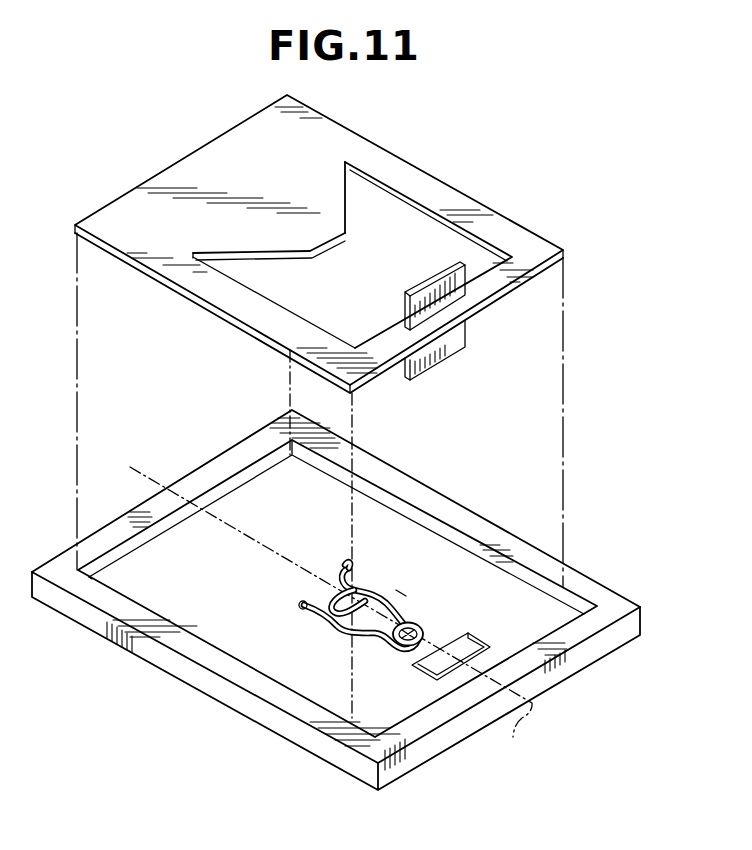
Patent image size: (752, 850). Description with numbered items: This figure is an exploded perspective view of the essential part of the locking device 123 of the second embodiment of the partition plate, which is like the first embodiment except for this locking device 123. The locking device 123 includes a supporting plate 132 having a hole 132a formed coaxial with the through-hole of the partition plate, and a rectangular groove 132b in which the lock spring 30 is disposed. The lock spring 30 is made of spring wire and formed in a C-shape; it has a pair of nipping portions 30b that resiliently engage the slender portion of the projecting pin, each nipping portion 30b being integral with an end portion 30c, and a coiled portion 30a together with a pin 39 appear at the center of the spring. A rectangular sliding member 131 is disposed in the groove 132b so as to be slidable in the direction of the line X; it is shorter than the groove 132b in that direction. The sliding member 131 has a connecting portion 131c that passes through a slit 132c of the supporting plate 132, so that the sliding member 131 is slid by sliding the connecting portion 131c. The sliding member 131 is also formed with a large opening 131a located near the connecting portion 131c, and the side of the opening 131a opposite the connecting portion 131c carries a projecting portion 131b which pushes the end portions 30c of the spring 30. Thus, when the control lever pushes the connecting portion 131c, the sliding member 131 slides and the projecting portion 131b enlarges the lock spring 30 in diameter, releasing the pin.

The locking device 123 is at (588, 198).
The sliding member 131 is at (508, 220).
The opening 131a is at (420, 208).
The projecting portion 131b is at (336, 252).
The connecting portion 131c is at (433, 293).
The supporting plate 132 is at (618, 598).
The hole 132a is at (408, 575).
The rectangular groove 132b is at (290, 668).
The slit 132c is at (548, 681).
The lock spring 30 is at (385, 588).
The coil of spring 30a is at (404, 652).
The nipping portions 30b is at (405, 607).
The end portions 30c is at (345, 568).
The pivot pin 39 is at (425, 633).